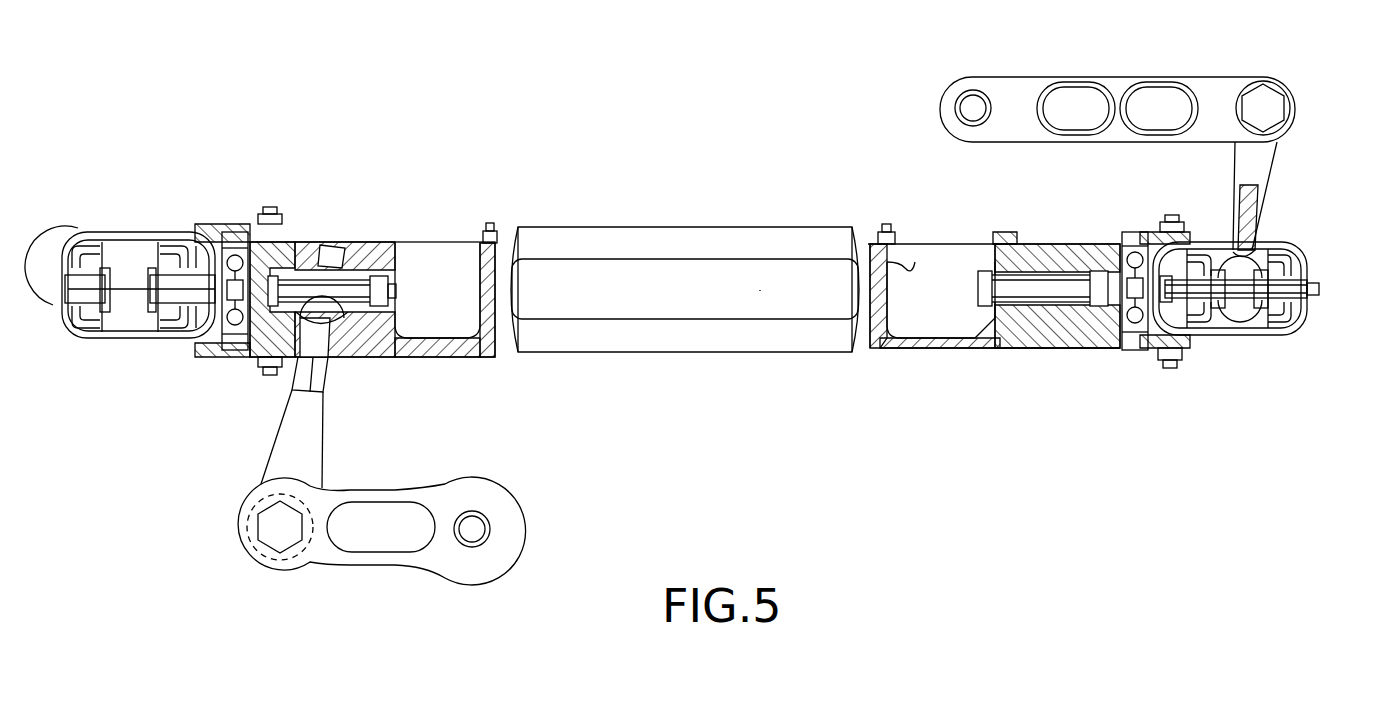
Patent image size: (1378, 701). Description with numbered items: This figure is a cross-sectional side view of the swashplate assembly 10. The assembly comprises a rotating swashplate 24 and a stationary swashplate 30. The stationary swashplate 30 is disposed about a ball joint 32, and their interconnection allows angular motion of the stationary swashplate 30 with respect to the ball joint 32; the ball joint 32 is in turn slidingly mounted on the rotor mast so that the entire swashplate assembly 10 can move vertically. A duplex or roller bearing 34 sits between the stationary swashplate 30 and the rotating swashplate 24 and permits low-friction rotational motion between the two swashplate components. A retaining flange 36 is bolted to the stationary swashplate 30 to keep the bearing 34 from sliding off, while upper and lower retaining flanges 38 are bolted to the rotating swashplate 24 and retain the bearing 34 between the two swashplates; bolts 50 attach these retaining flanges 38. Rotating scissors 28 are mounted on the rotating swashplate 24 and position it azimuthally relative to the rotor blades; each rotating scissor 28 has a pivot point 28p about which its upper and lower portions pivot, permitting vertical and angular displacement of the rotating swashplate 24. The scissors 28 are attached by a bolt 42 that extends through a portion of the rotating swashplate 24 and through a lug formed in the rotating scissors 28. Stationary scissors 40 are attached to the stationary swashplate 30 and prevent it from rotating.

The swashplate assembly 10 is at (780, 447).
The rotating swashplate 24 is at (110, 247).
The rotating scissors 28 is at (1020, 92).
The pivot point 28p is at (1270, 100).
The stationary swashplate 30 is at (1010, 350).
The ball joint 32 is at (858, 232).
The duplex or roller bearing 34 is at (246, 345).
The retaining flange 36 is at (252, 244).
The upper and lower retaining flanges 38 is at (218, 230).
The stationary scissors 40 is at (384, 566).
The bolt 42 is at (1308, 278).
The bolts 50 is at (1185, 355).